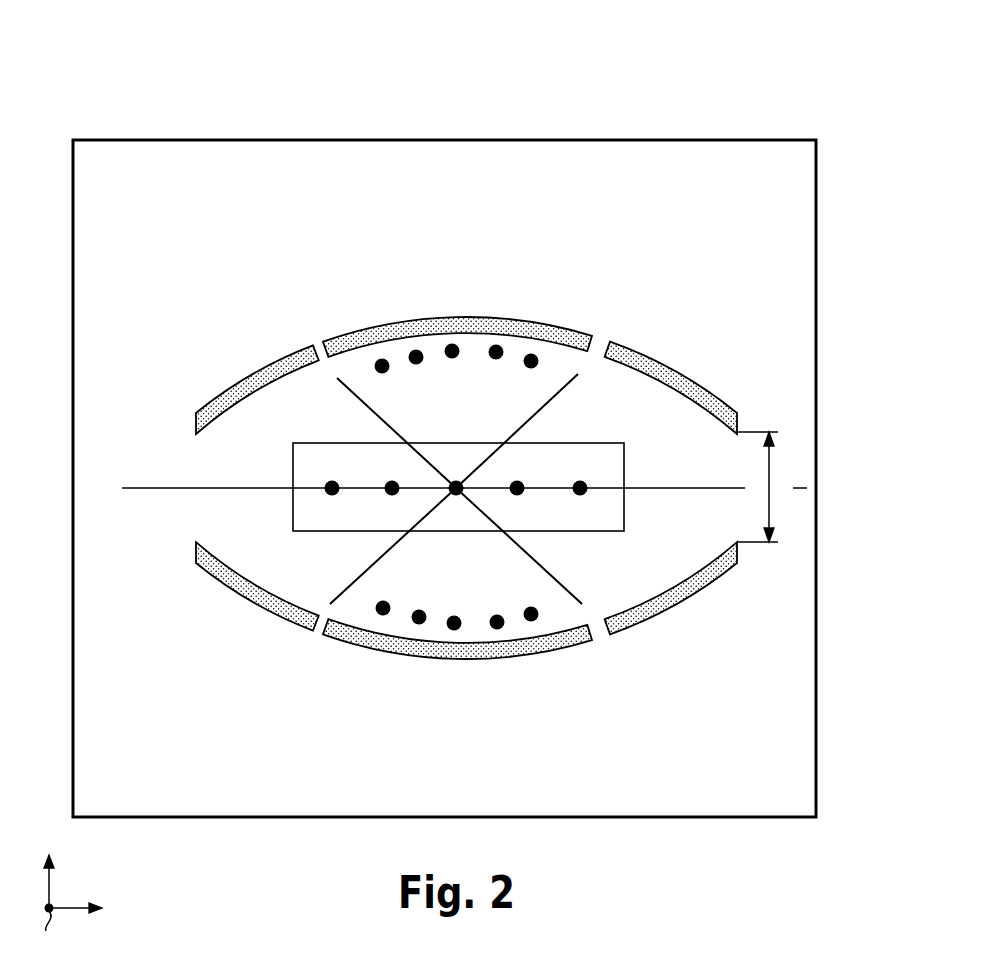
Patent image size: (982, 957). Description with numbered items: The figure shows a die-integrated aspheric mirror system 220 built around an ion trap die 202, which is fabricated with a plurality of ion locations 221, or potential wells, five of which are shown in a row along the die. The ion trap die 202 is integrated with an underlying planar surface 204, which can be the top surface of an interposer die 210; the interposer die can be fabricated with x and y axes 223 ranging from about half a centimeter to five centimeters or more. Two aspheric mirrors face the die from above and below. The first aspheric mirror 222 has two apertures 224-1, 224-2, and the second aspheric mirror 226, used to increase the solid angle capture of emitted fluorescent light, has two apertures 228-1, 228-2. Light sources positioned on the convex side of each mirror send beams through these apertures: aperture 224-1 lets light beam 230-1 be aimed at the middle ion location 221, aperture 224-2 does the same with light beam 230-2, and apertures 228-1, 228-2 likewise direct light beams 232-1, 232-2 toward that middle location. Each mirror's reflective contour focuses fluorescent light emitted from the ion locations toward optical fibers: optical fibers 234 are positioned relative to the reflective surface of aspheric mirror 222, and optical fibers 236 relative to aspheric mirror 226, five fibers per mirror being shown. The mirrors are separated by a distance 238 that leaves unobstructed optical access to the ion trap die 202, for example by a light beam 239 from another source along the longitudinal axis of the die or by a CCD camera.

The die-integrated aspheric mirror system 220 is at (128, 82).
The interposer die 210 is at (517, 139).
The underlying planar surface 204 is at (198, 284).
The ion trap die 202 is at (316, 441).
The ion locations 221 is at (580, 486).
The aspheric mirror 222 is at (236, 374).
The aperture 224-1 is at (313, 352).
The aperture 224-2 is at (603, 347).
The second aspheric mirror 226 is at (233, 584).
The aperture 228-1 is at (313, 620).
The aperture 228-2 is at (603, 627).
The light beam 230-1 is at (369, 398).
The light beam 230-2 is at (556, 390).
The light beam 232-1 is at (363, 571).
The light beam 232-2 is at (548, 573).
The optical fibers 234 is at (453, 349).
The optical fibers 236 is at (454, 625).
The distance 238 is at (759, 487).
The light beam 239 is at (146, 486).
The x and y axes 223 is at (73, 887).